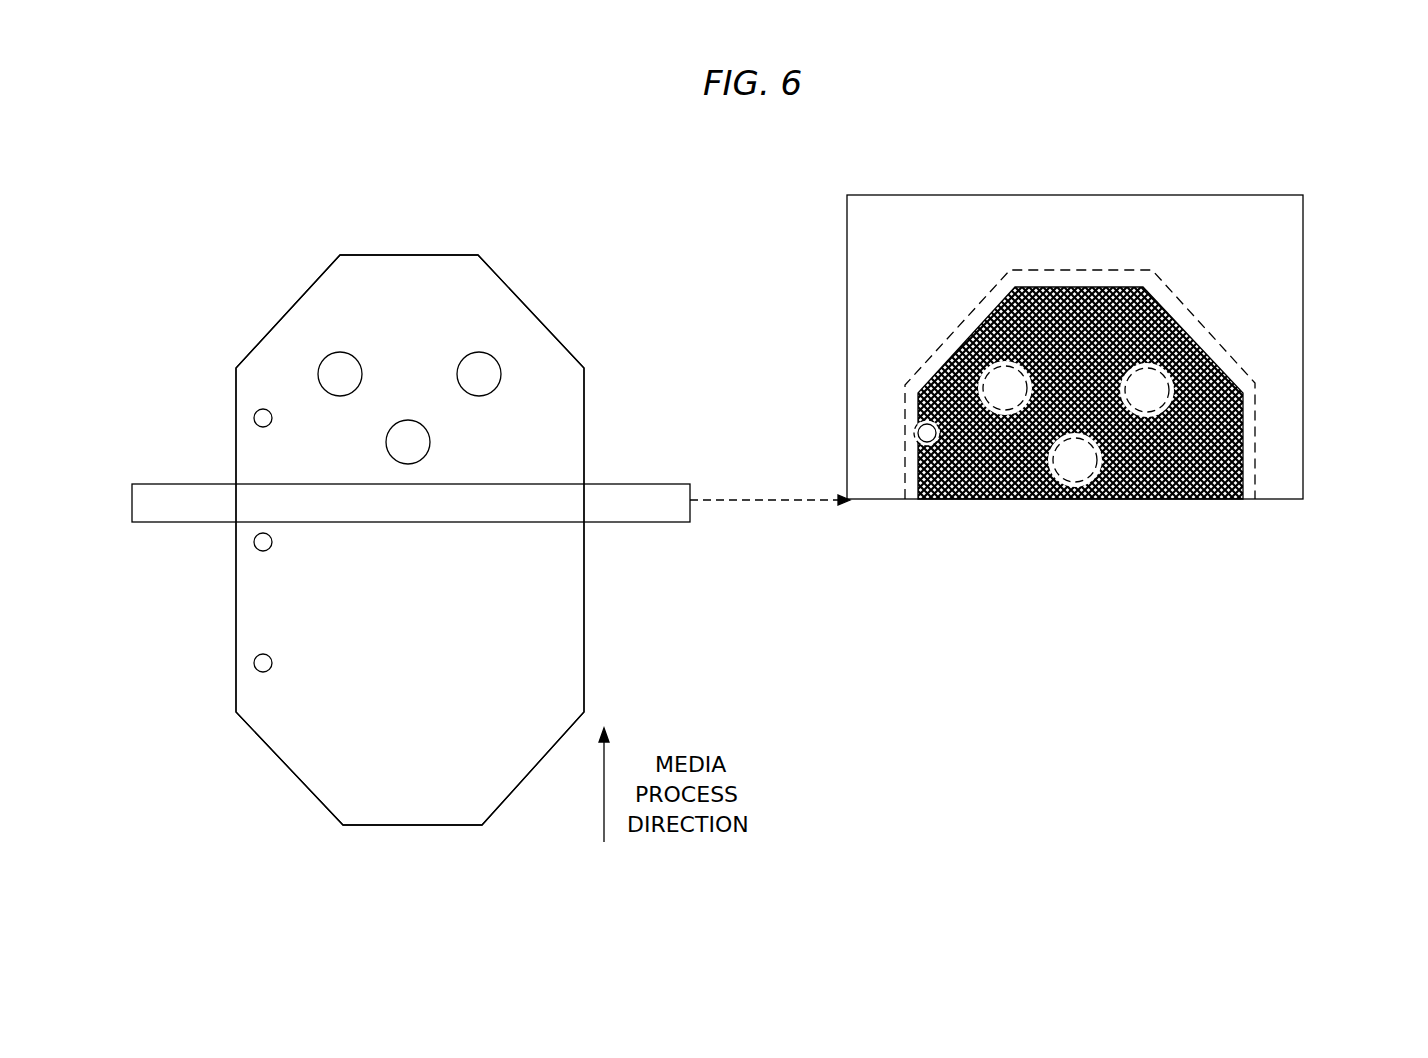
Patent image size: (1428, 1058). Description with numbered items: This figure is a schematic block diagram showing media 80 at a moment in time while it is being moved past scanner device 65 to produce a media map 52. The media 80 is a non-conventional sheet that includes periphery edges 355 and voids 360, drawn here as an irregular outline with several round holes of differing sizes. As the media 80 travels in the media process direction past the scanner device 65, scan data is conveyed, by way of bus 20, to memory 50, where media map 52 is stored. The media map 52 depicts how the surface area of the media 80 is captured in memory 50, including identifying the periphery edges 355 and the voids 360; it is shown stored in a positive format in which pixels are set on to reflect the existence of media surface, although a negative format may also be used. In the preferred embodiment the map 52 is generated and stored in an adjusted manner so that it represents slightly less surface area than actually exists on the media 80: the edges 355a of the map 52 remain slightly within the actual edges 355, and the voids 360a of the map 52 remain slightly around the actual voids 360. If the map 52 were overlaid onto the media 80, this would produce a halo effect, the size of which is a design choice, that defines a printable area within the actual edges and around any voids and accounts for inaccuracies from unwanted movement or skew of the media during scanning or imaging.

The bus 20 is at (780, 502).
The memory 50 is at (1195, 195).
The media map 52 is at (1083, 460).
The scanner device 65 is at (167, 483).
The media 80 is at (484, 787).
The periphery edges 355 is at (302, 293).
The edges of map 355a is at (955, 340).
The voids 360 is at (430, 441).
The voids of map 360a is at (945, 374).